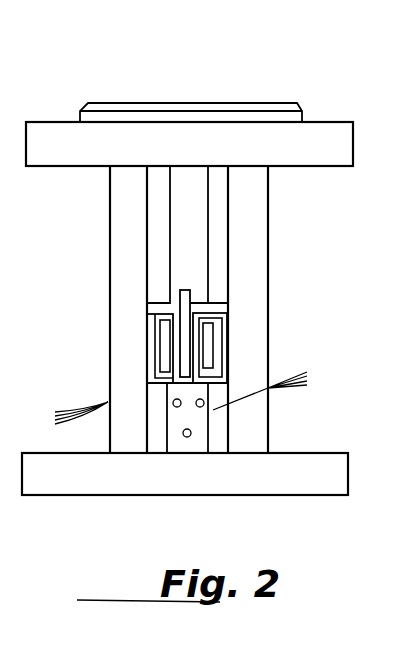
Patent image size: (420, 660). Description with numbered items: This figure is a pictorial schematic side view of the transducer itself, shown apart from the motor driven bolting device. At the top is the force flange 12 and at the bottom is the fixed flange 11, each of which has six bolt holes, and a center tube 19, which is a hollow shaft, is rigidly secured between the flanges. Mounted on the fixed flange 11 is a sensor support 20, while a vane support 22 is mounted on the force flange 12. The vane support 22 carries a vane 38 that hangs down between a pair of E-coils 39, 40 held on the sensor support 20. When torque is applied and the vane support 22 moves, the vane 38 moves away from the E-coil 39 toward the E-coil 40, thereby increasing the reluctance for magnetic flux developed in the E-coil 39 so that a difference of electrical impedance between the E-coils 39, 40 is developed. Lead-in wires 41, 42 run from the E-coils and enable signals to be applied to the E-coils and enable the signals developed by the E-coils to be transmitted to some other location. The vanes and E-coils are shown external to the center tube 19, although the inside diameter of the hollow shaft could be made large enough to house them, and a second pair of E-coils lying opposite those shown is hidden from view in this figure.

The force flange 12 is at (48, 130).
The fixed flange 11 is at (122, 482).
The center tube 19 is at (110, 222).
The vane support 22 is at (192, 235).
The vane 38 is at (187, 311).
The E-coil 39 is at (168, 340).
The E-coil 40 is at (207, 347).
The lead-in wire 41 is at (80, 410).
The lead-in wire 42 is at (292, 373).
The sensor support 20 is at (198, 432).